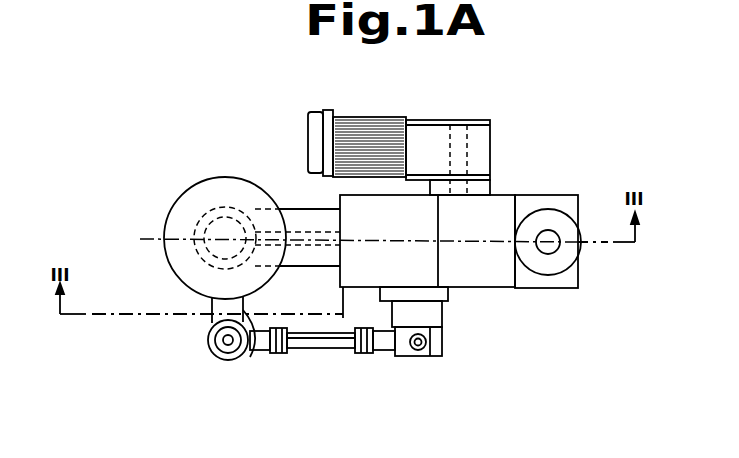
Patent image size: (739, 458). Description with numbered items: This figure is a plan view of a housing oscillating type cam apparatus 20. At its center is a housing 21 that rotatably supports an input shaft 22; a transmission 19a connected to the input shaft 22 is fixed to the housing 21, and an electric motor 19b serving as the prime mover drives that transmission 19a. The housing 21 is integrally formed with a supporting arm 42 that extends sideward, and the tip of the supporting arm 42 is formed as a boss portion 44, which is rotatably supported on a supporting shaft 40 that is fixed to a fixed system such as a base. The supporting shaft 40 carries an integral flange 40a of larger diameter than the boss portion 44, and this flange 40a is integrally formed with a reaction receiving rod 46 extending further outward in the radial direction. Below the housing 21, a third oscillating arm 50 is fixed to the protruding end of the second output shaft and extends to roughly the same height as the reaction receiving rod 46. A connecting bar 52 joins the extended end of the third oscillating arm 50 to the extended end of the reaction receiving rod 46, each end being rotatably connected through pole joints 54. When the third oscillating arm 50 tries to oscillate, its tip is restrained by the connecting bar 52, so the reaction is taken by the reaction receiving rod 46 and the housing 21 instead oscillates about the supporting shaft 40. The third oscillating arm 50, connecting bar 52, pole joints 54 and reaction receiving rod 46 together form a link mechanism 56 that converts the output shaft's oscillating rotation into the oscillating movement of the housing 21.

The transmission 19a is at (447, 122).
The electric motor 19b is at (356, 118).
The housing oscillating type cam apparatus 20 is at (543, 124).
The housing 21 is at (496, 289).
The input shaft 22 is at (467, 157).
The supporting shaft 40 is at (140, 240).
The flange 40a is at (203, 293).
The supporting arm 42 is at (312, 213).
The boss portion 44 is at (226, 202).
The reaction receiving rod 46 is at (249, 338).
The third oscillating arm 50 is at (443, 346).
The connecting bar 52 is at (311, 333).
The pole joints 54 is at (208, 340).
The link mechanism 56 is at (289, 399).